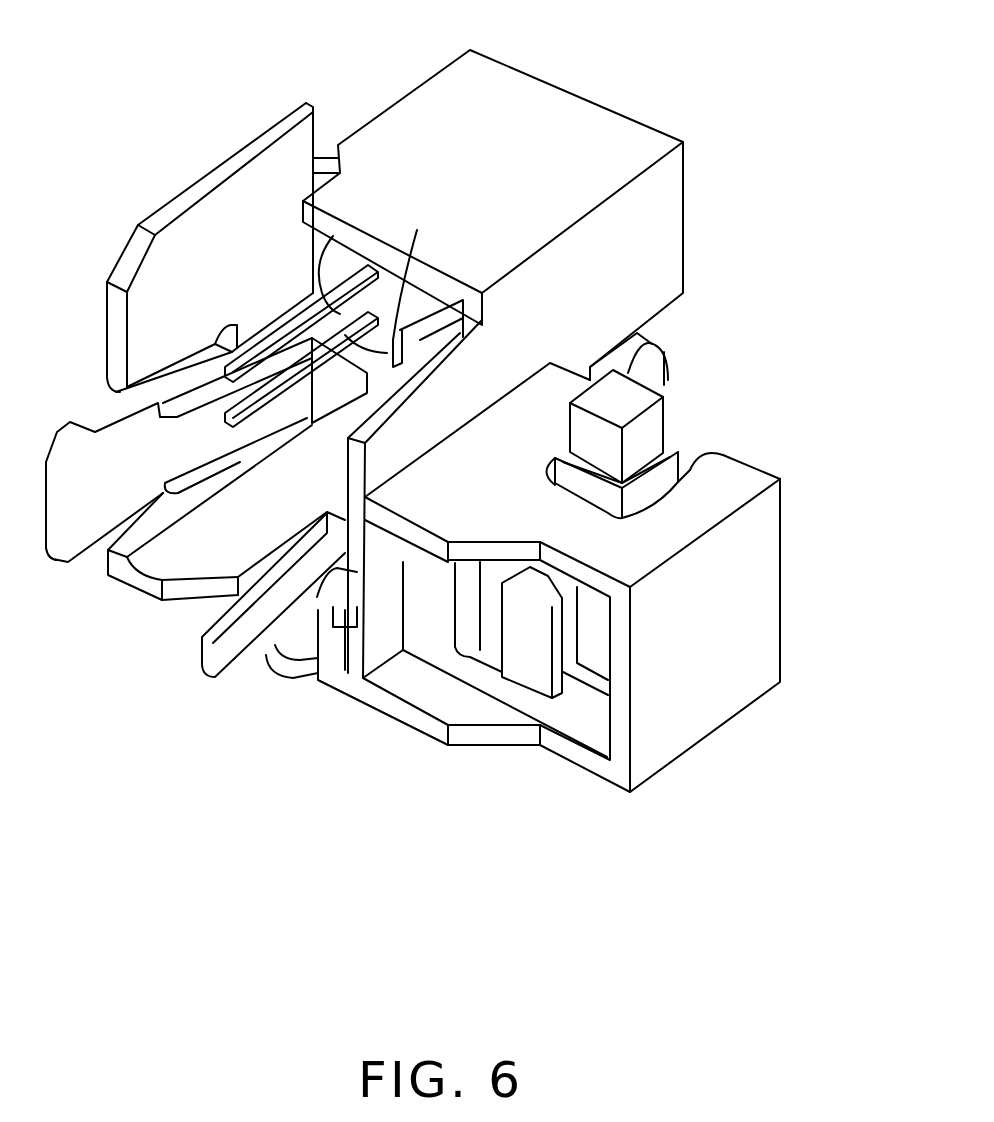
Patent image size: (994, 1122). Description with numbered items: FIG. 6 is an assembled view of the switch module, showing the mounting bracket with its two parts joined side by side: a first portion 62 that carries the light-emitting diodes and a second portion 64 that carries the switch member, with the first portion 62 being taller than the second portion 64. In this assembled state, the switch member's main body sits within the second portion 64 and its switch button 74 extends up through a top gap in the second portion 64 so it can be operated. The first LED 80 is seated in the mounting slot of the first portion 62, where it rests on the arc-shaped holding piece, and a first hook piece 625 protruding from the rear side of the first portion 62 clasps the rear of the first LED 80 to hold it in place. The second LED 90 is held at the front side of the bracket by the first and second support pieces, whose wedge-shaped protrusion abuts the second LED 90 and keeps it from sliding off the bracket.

The first portion 62 is at (467, 87).
The first hook piece 625 is at (397, 335).
The second portion 64 is at (748, 477).
The switch button 74 is at (653, 425).
The first LED 80 is at (335, 265).
The second LED 90 is at (653, 362).